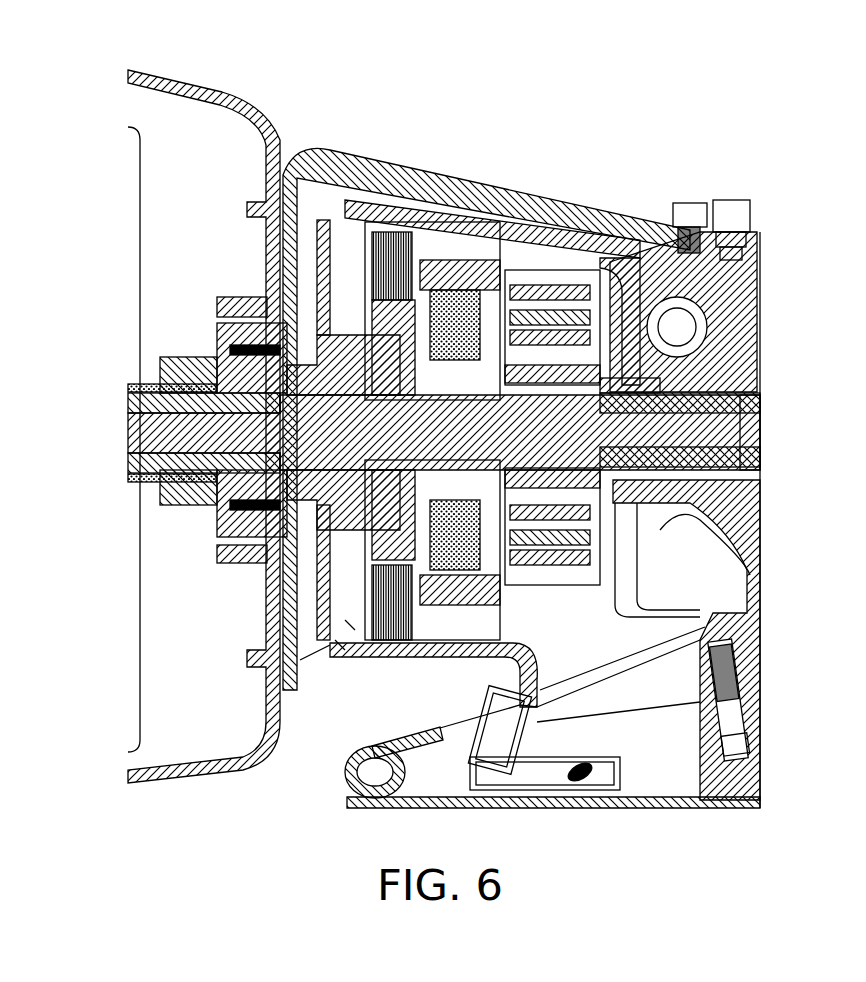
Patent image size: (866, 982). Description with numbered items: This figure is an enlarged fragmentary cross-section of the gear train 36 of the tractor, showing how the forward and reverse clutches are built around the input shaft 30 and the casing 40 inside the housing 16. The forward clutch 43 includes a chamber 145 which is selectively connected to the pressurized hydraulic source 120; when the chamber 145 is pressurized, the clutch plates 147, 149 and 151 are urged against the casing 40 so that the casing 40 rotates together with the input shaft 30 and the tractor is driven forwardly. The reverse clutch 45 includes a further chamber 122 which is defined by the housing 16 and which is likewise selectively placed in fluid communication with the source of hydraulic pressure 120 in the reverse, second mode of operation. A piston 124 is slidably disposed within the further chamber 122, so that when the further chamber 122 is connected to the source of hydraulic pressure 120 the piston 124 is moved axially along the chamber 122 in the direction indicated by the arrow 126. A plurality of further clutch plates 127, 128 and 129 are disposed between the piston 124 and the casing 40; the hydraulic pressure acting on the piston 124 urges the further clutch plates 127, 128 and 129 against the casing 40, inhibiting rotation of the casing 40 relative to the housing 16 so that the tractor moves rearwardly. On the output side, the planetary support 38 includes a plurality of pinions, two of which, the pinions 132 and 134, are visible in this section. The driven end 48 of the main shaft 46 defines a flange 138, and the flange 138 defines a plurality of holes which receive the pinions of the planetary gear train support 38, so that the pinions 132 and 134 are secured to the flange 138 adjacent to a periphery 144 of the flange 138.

The housing 16 is at (543, 152).
The input shaft 30 is at (158, 440).
The gear train 36 is at (580, 607).
The planetary support 38 is at (616, 268).
The casing 40 is at (552, 270).
The forward clutch 43 is at (463, 743).
The reverse clutch 45 is at (316, 250).
The main shaft 46 is at (757, 413).
The driven end 48 is at (650, 355).
The pressurized hydraulic source 120 is at (468, 612).
The further chamber 122 is at (330, 307).
The piston 124 is at (322, 323).
The arrow 126 is at (457, 85).
The further clutch plate 127 is at (374, 230).
The further clutch plate 128 is at (420, 265).
The further clutch plate 129 is at (436, 285).
The pinion 132 is at (667, 338).
The pinion 134 is at (750, 457).
The flange 138 is at (707, 312).
The periphery 144 is at (620, 550).
The chamber 145 is at (497, 600).
The clutch plate 147 is at (352, 625).
The clutch plate 149 is at (340, 645).
The clutch plate 151 is at (328, 660).